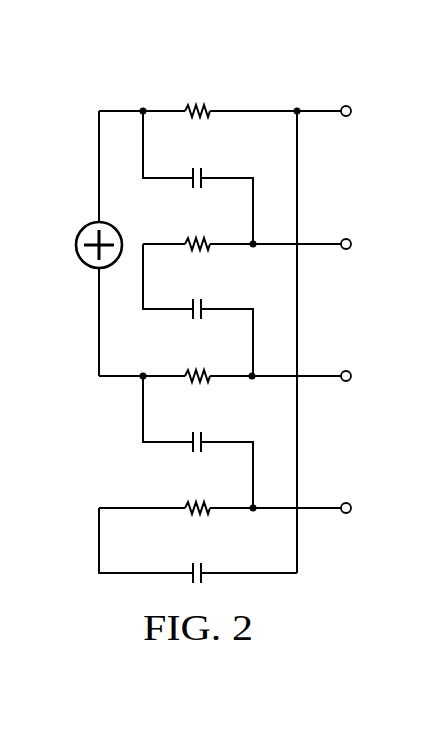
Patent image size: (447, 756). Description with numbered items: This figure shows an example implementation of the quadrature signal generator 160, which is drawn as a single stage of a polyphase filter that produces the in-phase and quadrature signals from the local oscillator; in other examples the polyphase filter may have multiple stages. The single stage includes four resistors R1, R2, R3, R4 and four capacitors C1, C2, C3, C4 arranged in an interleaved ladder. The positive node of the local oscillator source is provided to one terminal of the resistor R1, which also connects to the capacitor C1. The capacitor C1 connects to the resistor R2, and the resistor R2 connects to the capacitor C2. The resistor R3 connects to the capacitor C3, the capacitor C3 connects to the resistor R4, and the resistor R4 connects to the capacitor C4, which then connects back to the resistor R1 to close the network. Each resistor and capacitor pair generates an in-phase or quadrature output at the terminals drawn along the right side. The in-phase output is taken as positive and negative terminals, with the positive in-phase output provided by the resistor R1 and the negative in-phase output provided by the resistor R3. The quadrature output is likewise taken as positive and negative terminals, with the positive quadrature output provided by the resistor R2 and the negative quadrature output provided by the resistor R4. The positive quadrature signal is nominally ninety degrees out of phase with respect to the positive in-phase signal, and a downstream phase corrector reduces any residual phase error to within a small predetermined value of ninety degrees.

The quadrature signal generator 160 is at (116, 63).
The resistor R1 is at (198, 98).
The resistor R2 is at (198, 231).
The resistor R3 is at (198, 363).
The resistor R4 is at (198, 496).
The capacitor C1 is at (198, 163).
The capacitor C2 is at (198, 296).
The capacitor C3 is at (198, 427).
The capacitor C4 is at (198, 560).